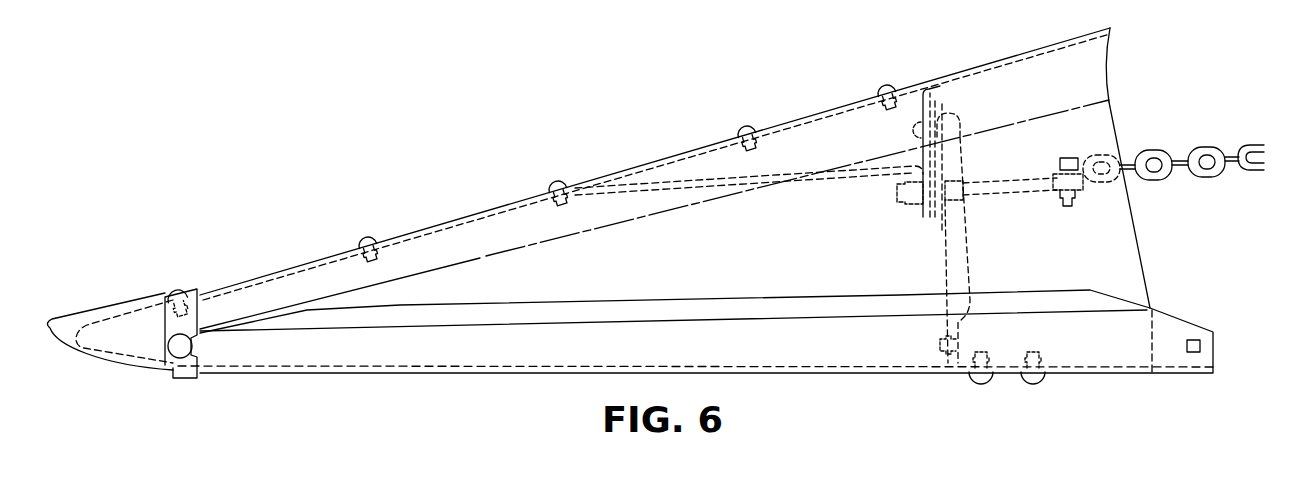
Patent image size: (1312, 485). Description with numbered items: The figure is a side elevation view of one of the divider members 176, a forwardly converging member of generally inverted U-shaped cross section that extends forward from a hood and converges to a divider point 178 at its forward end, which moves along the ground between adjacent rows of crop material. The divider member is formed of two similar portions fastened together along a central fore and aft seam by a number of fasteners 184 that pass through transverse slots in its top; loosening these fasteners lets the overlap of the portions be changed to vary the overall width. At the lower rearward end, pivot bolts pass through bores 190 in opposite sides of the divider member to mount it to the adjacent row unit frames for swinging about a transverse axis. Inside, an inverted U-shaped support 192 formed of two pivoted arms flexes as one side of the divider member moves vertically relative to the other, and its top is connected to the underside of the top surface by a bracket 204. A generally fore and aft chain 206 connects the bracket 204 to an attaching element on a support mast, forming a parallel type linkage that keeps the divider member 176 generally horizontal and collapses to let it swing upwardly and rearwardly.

The divider member 176 is at (612, 172).
The divider point 178 is at (127, 327).
The fasteners 184 is at (558, 186).
The bores 190 is at (1200, 347).
The inverted U-shaped support 192 is at (972, 255).
The bracket 204 is at (933, 100).
The chain 206 is at (1203, 150).